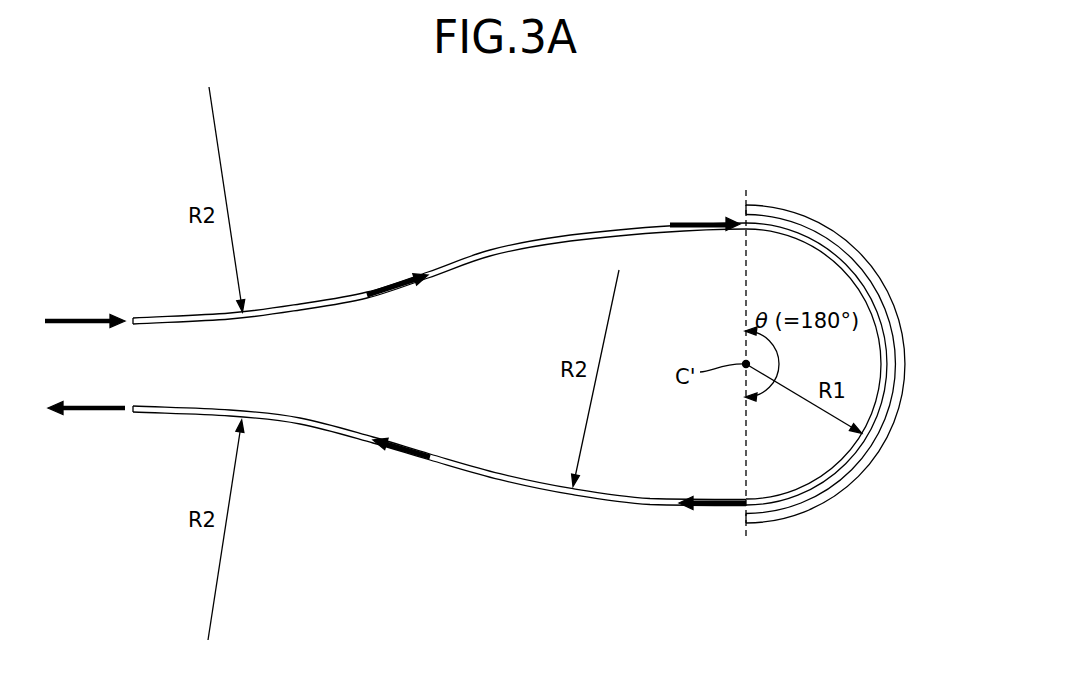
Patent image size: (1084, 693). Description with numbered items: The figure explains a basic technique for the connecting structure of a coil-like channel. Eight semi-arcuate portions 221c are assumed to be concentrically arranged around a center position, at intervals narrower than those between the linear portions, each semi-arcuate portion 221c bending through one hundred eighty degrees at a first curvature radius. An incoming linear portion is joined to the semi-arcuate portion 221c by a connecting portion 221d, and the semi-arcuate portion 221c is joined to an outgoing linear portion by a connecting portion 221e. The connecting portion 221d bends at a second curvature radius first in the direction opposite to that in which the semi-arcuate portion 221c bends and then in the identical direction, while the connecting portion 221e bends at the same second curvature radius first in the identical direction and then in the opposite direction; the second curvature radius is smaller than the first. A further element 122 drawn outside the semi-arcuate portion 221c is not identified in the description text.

The connecting portion 221d is at (505, 246).
The connecting portion 221e is at (508, 487).
The semi-arcuate portion 221c is at (863, 280).
The tube body 122 is at (885, 448).